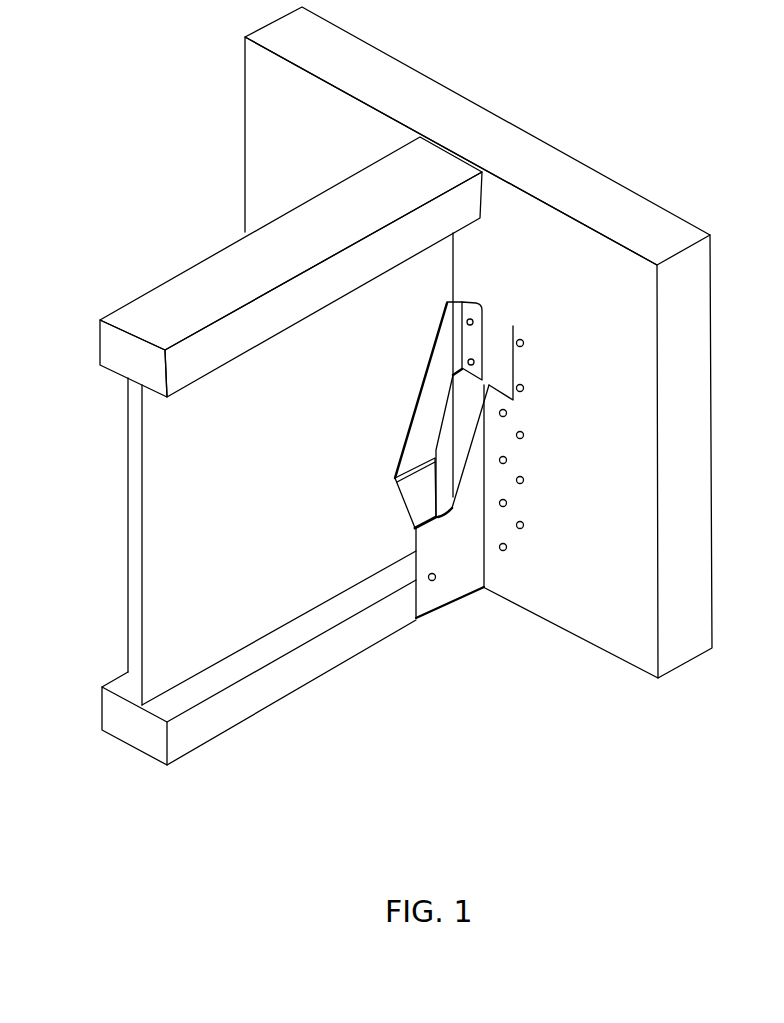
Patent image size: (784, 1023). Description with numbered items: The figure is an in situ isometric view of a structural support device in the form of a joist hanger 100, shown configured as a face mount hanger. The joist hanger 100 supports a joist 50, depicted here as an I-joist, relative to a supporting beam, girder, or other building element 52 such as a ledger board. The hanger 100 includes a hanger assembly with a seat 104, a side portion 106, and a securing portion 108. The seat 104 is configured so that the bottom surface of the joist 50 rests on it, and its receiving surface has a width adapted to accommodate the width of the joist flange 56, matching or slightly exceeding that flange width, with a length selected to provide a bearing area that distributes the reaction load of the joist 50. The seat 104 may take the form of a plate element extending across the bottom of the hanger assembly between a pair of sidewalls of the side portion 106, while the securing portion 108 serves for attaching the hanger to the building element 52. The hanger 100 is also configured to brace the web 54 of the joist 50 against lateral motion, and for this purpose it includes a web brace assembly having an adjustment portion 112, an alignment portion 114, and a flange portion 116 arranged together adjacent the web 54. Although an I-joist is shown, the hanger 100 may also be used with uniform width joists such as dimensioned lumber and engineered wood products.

The joist 50 is at (254, 504).
The building element 52 is at (612, 205).
The web 54 is at (168, 498).
The joist flange 56 is at (135, 735).
The joist hanger 100 is at (456, 499).
The seat 104 is at (418, 628).
The side portion 106 is at (443, 585).
The securing portion 108 is at (517, 455).
The adjustment portion 112 is at (413, 490).
The alignment portion 114 is at (428, 378).
The flange portion 116 is at (473, 332).